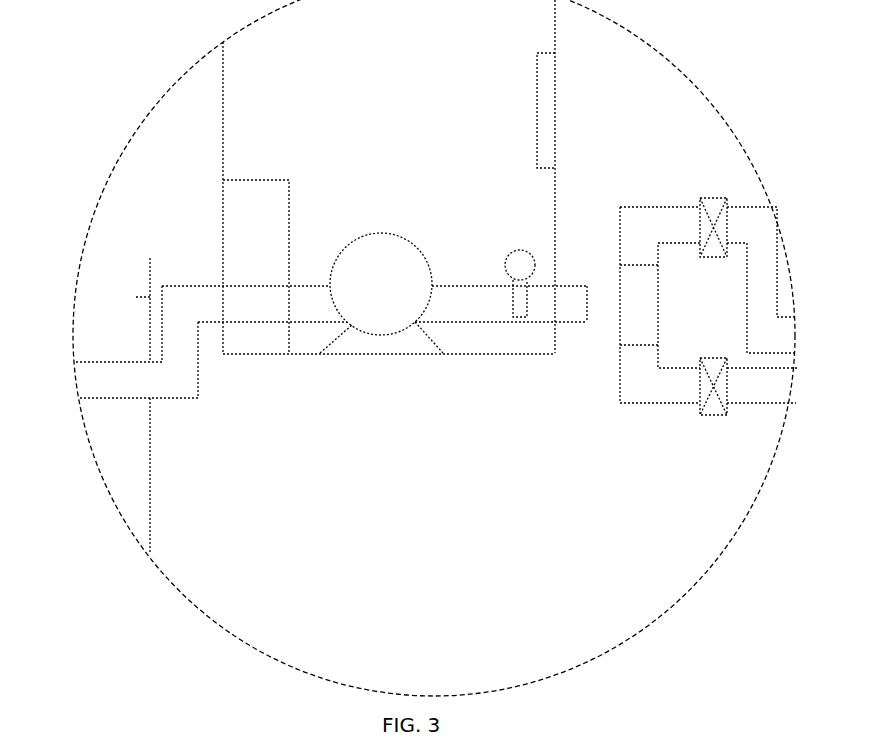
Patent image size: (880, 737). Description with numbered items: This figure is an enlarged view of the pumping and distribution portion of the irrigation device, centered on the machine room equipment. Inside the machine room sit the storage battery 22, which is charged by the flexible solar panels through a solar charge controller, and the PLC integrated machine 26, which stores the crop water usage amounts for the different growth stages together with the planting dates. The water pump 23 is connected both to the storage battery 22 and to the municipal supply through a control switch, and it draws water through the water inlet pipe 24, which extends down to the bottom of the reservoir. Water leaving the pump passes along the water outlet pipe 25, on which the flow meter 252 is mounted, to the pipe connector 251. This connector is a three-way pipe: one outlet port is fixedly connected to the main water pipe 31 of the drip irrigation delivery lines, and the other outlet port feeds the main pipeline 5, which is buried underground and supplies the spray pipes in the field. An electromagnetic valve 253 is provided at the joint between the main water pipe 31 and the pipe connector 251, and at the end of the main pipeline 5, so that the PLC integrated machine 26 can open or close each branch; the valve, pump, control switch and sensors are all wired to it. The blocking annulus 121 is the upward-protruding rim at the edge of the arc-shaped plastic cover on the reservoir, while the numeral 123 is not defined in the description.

The blocking annulus 121 is at (138, 304).
The water outlet 123 is at (124, 297).
The storage battery 22 is at (239, 230).
The water pump 23 is at (399, 268).
The water inlet pipe 24 is at (168, 384).
The water outlet pipe 25 is at (477, 286).
The PLC integrated machine 26 is at (549, 96).
The main water pipe 31 is at (671, 209).
The pipe connector 251 is at (632, 341).
The flow meter 252 is at (519, 266).
The electromagnetic valve 253 is at (714, 199).
The main pipeline 5 is at (662, 304).